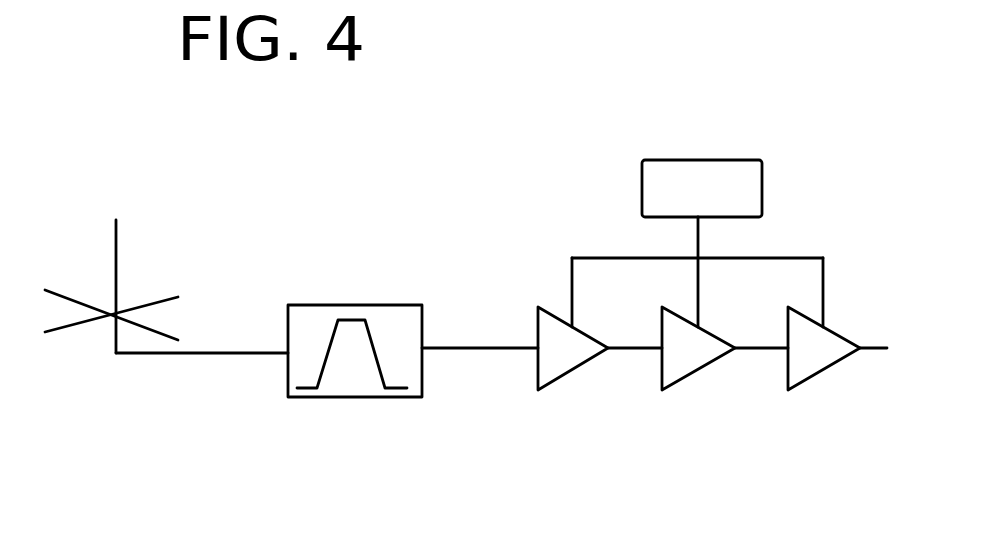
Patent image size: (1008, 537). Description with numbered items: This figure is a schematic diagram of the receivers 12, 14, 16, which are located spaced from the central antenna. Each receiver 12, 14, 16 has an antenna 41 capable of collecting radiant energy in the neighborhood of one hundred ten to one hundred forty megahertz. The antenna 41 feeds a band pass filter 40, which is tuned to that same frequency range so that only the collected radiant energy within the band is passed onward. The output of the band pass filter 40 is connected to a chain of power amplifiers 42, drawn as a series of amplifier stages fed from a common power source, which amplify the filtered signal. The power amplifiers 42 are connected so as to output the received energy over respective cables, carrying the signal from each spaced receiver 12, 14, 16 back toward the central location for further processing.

The antenna 41 is at (123, 357).
The band pass filter 40 is at (285, 363).
The receiver 12 is at (552, 274).
The receiver 14 is at (725, 348).
The receiver 16 is at (837, 348).
The power amplifiers 42 is at (582, 372).